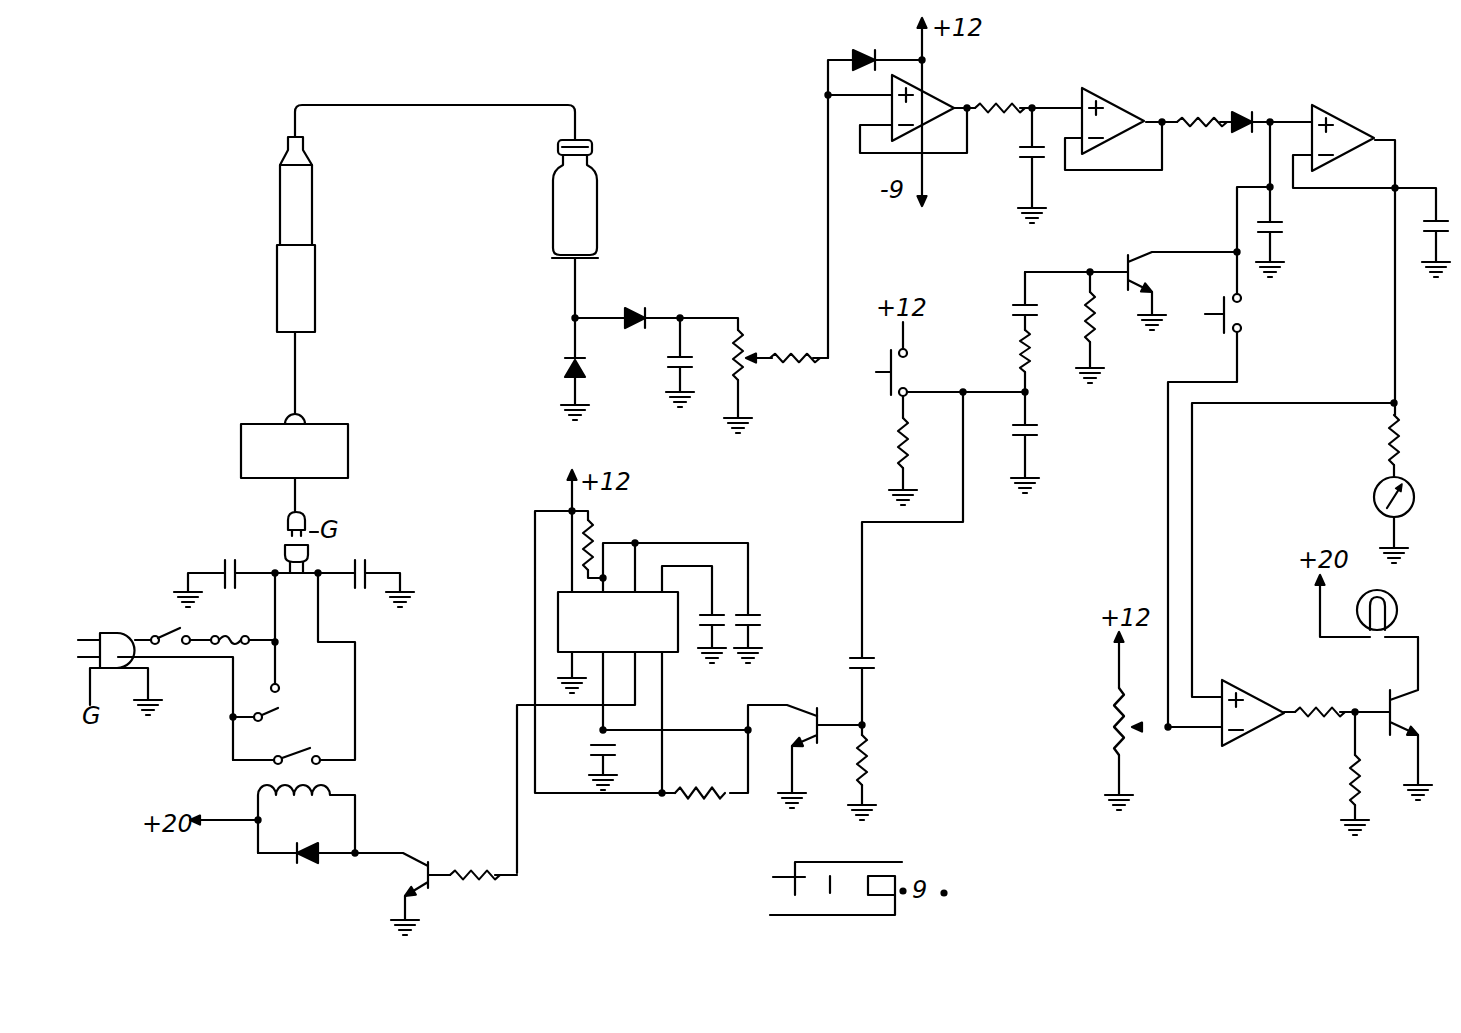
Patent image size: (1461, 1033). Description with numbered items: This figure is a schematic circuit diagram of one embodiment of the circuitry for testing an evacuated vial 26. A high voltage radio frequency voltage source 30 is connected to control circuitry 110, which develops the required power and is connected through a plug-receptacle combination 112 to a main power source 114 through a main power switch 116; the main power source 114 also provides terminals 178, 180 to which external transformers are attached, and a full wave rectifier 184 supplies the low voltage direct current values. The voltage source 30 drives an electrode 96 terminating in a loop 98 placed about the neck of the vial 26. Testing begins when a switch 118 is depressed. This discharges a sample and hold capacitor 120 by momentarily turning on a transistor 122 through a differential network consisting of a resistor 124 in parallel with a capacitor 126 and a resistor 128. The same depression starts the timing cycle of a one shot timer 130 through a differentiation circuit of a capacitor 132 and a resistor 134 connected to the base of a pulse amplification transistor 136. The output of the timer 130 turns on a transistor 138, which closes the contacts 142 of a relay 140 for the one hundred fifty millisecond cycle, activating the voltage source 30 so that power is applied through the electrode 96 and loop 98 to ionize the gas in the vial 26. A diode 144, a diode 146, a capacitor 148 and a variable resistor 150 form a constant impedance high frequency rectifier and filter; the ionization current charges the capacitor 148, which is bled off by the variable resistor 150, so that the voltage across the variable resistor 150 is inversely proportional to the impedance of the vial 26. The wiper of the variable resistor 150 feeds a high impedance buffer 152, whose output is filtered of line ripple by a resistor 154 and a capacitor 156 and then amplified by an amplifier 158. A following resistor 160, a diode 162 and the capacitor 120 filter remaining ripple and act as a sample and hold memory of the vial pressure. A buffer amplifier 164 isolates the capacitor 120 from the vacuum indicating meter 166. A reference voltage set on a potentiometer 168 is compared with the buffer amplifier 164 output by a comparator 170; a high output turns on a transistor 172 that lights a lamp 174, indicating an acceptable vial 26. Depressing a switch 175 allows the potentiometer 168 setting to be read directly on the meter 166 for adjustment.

The vial 26 is at (597, 212).
The voltage source 30 is at (277, 293).
The electrode 96 is at (480, 105).
The loop 98 is at (592, 150).
The control circuitry 110 is at (348, 452).
The plug-receptacle combination 112 is at (284, 548).
The main power source 114 is at (134, 632).
The main power switch 116 is at (182, 632).
The switch 118 is at (886, 382).
The sample and hold capacitor 120 is at (1283, 228).
The transistor 122 is at (1115, 262).
The resistor 124 is at (1096, 322).
The capacitor 126 is at (1014, 300).
The resistor 128 is at (1013, 346).
The one shot timer 130 is at (678, 655).
The capacitor 132 is at (880, 666).
The resistor 134 is at (872, 762).
The pulse amplification transistor 136 is at (812, 705).
The transistor 138 is at (416, 862).
The relay 140 is at (328, 800).
The contacts 142 is at (292, 756).
The diode 144 is at (563, 373).
The diode 146 is at (633, 312).
The capacitor 148 is at (674, 374).
The variable resistor 150 is at (748, 345).
The high impedance buffer 152 is at (930, 97).
The resistor 154 is at (1006, 104).
The capacitor 156 is at (1020, 157).
The amplifier 158 is at (1125, 104).
The resistor 160 is at (1188, 132).
The diode 162 is at (1244, 114).
The buffer amplifier 164 is at (1355, 122).
The vacuum indicating meter 166 is at (1374, 494).
The potentiometer 168 is at (1112, 728).
The comparator 170 is at (1248, 694).
The transistor 172 is at (1386, 694).
The lamp 174 is at (1398, 610).
The switch 175 is at (1220, 326).
The terminal 178 is at (282, 684).
The terminal 180 is at (282, 712).
The full wave rectifier 184 is at (562, 262).